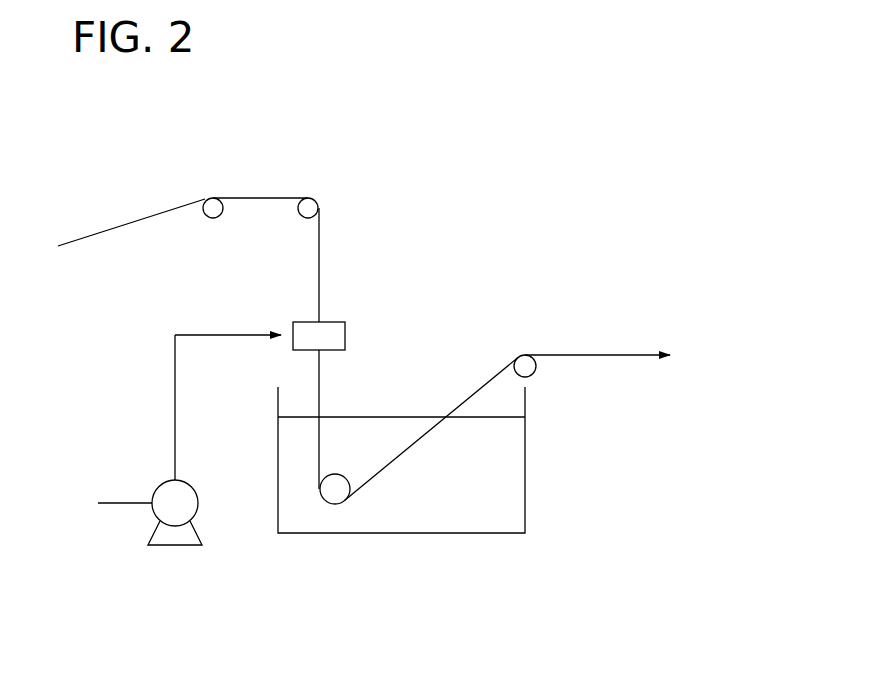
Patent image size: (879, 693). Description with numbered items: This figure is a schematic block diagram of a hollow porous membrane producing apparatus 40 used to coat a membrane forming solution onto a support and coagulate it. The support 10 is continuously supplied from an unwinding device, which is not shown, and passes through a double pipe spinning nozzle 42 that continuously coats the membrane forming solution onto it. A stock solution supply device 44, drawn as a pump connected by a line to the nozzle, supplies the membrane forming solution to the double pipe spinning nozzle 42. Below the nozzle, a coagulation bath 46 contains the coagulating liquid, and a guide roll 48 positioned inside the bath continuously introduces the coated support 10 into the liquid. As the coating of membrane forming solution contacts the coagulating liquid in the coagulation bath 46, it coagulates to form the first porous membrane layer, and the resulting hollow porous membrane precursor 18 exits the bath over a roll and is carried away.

The hollow porous membrane producing apparatus 40 is at (497, 159).
The support 10 is at (268, 197).
The double pipe spinning nozzle 42 is at (345, 337).
The stock solution supply device 44 is at (172, 547).
The coagulation bath 46 is at (432, 533).
The guide roll 48 is at (335, 505).
The hollow porous membrane precursor 18 is at (606, 355).